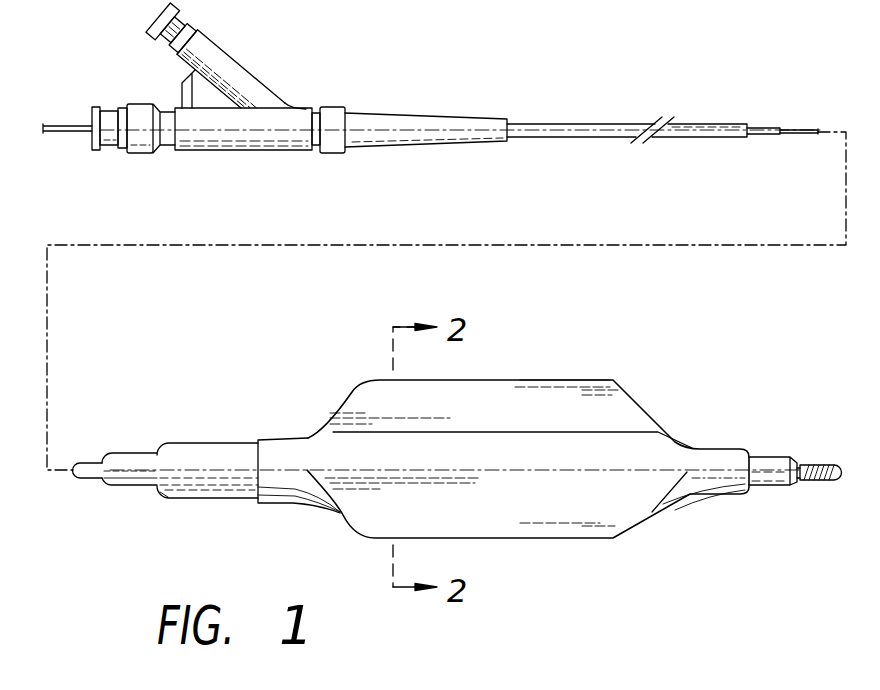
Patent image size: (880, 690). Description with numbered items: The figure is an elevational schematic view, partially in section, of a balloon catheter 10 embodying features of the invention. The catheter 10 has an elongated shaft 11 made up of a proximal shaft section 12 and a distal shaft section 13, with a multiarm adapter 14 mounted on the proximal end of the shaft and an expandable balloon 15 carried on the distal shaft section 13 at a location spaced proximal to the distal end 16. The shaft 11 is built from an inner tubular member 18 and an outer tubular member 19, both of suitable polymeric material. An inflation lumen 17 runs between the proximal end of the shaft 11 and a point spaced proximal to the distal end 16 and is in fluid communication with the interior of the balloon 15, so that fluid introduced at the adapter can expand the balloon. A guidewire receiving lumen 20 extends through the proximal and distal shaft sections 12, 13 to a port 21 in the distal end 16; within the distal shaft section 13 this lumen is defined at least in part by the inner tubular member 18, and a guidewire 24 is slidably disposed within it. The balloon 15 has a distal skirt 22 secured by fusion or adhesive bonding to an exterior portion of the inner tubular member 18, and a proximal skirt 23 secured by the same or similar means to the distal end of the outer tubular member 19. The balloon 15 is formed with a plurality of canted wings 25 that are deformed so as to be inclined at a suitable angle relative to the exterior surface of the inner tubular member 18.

The balloon catheter 10 is at (632, 78).
The elongated shaft 11 is at (739, 124).
The proximal shaft section 12 is at (665, 139).
The distal shaft section 13 is at (212, 442).
The multiarm adapter 14 is at (297, 118).
The expandable balloon 15 is at (500, 463).
The distal end 16 is at (797, 457).
The inflation lumen 17 is at (167, 490).
The inner tubular member 18 is at (760, 137).
The outer tubular member 19 is at (685, 124).
The guidewire receiving lumen 20 is at (105, 480).
The port 21 is at (805, 486).
The distal skirt 22 is at (727, 460).
The proximal skirt 23 is at (287, 445).
The guidewire 24 is at (68, 127).
The canted wings 25 is at (508, 392).